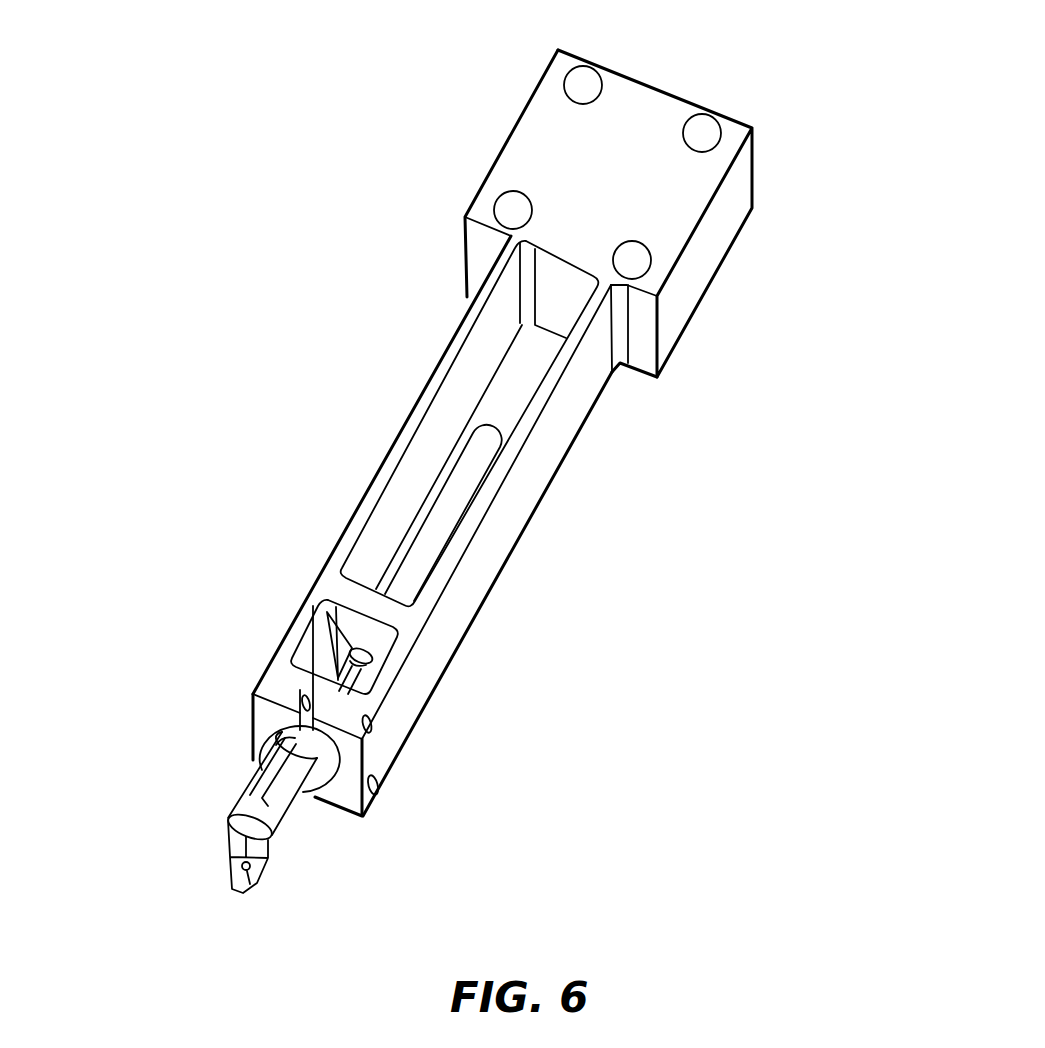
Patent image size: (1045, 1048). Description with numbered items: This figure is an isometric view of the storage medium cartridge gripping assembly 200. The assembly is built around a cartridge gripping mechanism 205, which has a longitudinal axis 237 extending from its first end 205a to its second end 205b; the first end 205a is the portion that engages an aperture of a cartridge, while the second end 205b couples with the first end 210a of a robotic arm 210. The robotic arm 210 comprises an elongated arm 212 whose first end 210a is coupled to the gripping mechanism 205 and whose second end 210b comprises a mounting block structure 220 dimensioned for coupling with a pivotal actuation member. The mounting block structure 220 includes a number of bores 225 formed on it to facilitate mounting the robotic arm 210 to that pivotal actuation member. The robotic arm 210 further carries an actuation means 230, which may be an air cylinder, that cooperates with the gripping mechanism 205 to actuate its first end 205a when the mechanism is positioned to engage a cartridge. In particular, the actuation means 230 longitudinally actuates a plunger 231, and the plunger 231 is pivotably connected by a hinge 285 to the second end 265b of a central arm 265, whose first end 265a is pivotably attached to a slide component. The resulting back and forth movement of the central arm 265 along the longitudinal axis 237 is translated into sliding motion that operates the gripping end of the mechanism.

The cartridge gripping assembly 200 is at (464, 461).
The cartridge gripping mechanism 205 is at (179, 799).
The first end of gripping mechanism 205a is at (182, 832).
The second end of gripping mechanism 205b is at (258, 724).
The robotic arm 210 is at (465, 526).
The first end of robotic arm 210a is at (393, 788).
The second end of robotic arm 210b is at (694, 342).
The elongated arm 212 is at (515, 507).
The mounting block structure 220 is at (632, 192).
The bores 225 is at (582, 104).
The actuation means 230 is at (445, 497).
The plunger 231 is at (355, 653).
The longitudinal axis 237 is at (224, 907).
The central arm 265 is at (348, 818).
The first end of central arm 265a is at (276, 818).
The second end of central arm 265b is at (318, 770).
The hinge 285 is at (325, 726).